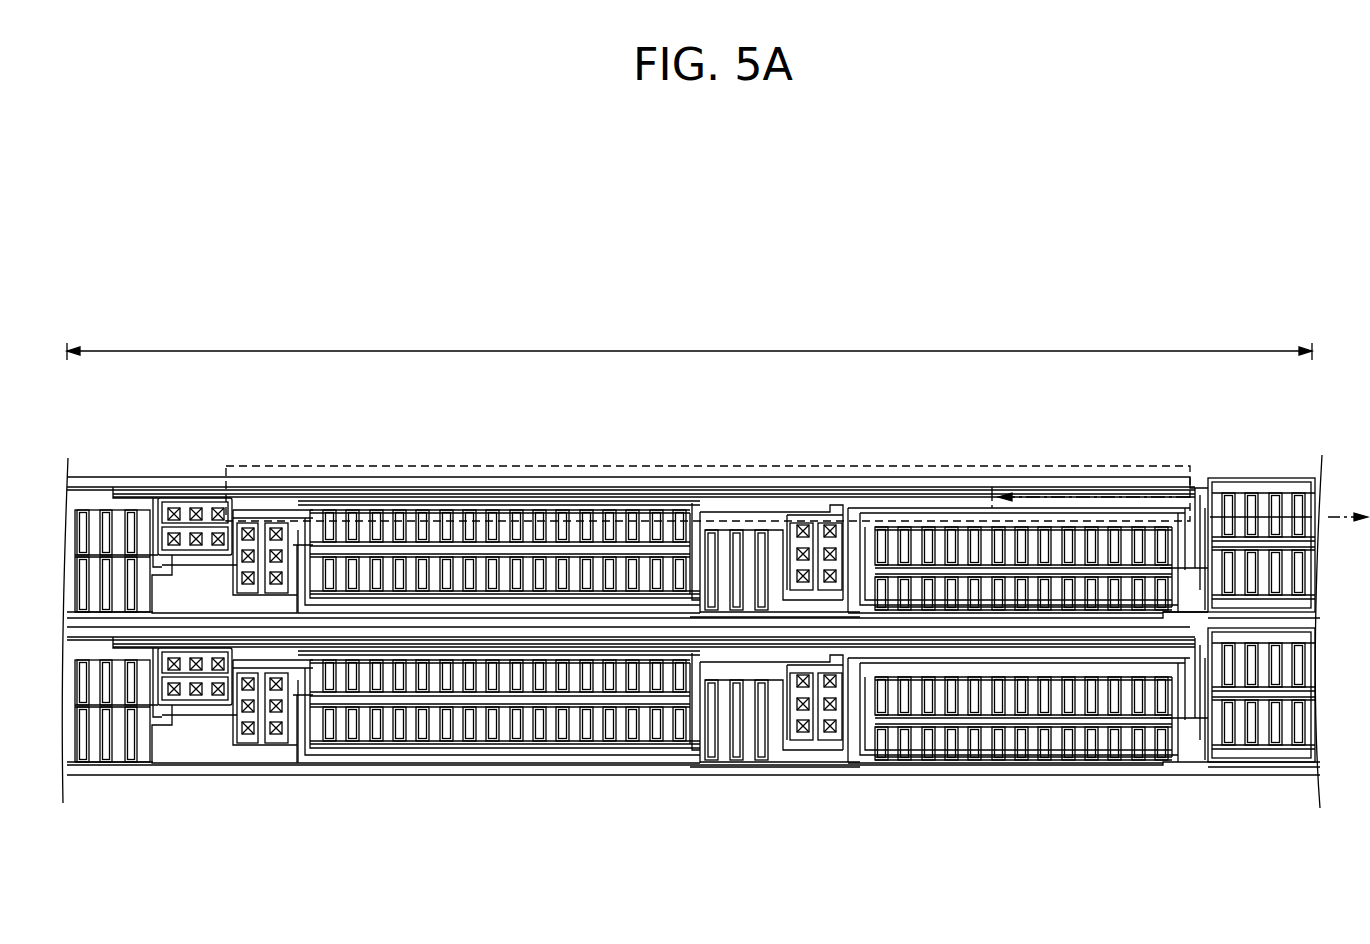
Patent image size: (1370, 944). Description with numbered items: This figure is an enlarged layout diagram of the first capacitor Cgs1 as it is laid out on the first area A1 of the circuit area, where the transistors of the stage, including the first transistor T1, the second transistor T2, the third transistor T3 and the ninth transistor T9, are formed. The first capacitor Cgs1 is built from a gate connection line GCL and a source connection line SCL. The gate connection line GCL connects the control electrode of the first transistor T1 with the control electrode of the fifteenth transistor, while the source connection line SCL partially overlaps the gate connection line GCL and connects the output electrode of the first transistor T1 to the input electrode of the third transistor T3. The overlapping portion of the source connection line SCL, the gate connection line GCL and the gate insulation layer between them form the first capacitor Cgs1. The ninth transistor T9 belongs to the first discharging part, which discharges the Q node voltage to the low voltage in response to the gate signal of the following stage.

The first area A1 is at (689, 339).
The gate connection line GCL is at (372, 492).
The source connection line SCL is at (474, 497).
The first capacitor Cgs1 is at (808, 466).
The first transistor T1 is at (1262, 727).
The second transistor T2 is at (997, 735).
The third transistor T3 is at (471, 731).
The ninth transistor T9 is at (752, 727).